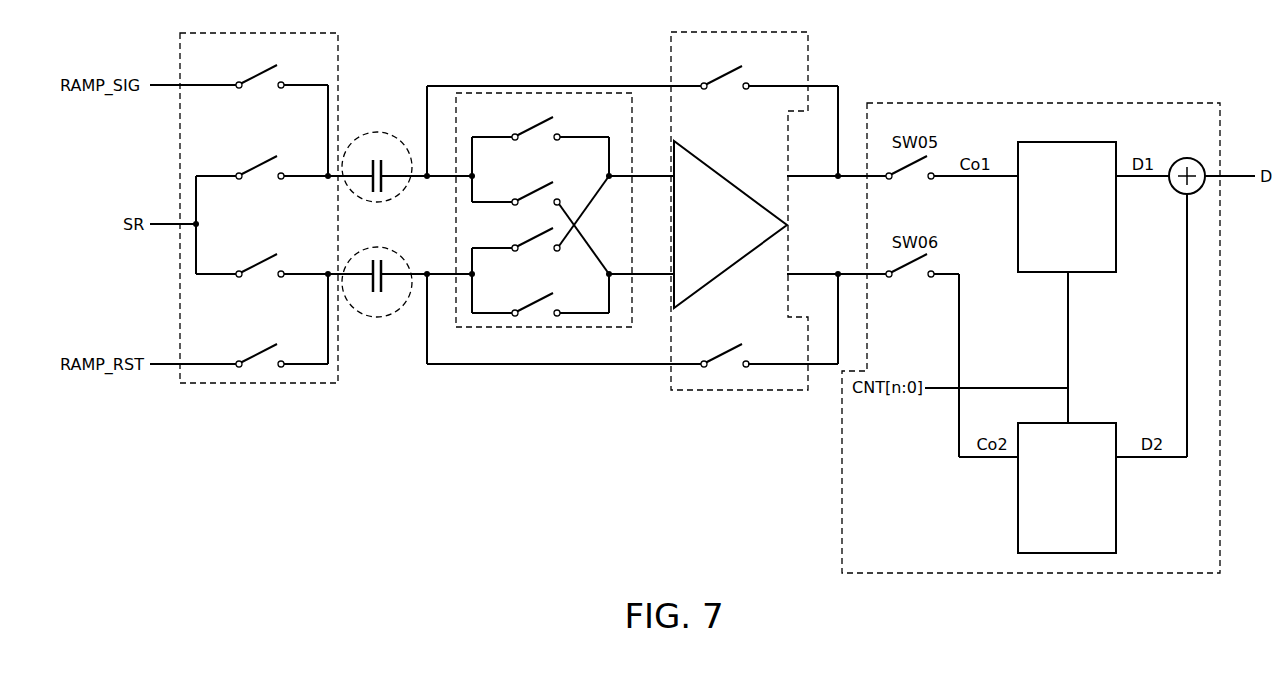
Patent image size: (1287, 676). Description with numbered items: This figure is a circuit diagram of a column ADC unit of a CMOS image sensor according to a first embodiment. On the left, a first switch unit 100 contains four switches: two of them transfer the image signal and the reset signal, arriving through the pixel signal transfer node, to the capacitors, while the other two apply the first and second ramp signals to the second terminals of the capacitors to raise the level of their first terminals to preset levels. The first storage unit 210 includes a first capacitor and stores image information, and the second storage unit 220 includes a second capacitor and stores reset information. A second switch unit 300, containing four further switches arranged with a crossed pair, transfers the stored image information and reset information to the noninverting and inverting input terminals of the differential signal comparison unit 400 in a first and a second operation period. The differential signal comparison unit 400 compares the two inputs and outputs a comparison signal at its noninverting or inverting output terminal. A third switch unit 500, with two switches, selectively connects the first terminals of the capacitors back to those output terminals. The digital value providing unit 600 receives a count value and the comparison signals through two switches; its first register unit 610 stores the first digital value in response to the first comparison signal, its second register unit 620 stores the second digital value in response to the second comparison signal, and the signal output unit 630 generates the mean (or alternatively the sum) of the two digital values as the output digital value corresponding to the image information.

The first switch unit 100 is at (258, 384).
The first storage unit 210 is at (375, 131).
The second storage unit 220 is at (375, 318).
The second switch unit 300 is at (545, 327).
The differential signal comparison unit 400 is at (710, 167).
The third switch unit 500 is at (808, 56).
The digital value providing unit 600 is at (1062, 306).
The first register unit 610 is at (1065, 142).
The second register unit 620 is at (1018, 522).
The signal output unit 630 is at (1193, 157).